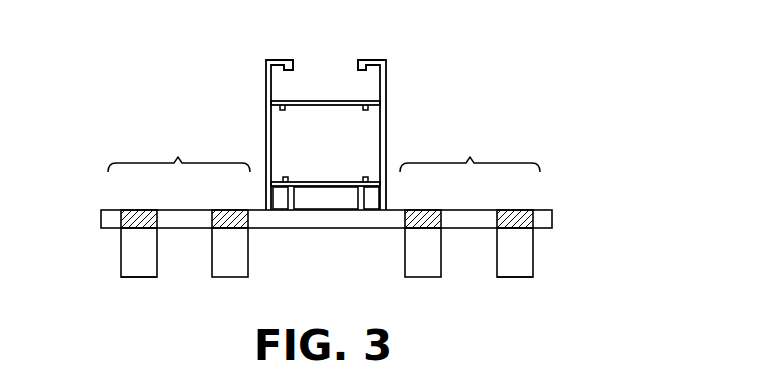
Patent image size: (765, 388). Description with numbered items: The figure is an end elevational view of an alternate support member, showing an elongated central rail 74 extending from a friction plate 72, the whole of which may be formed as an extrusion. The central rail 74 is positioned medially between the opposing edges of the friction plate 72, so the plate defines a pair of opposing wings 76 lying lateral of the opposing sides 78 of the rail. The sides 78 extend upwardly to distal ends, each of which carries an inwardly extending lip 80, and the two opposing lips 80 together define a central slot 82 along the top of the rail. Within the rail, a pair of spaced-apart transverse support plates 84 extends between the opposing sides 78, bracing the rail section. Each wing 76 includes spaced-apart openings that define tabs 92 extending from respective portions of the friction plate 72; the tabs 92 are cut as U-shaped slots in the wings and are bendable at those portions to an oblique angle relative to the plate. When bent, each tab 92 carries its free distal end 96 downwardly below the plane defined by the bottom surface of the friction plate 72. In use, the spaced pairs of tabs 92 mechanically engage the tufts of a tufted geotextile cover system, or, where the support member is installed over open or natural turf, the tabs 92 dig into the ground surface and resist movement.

The friction plate 72 is at (466, 212).
The central rail 74 is at (327, 105).
The wings 76 is at (331, 231).
The opposing sides 78 is at (266, 103).
The inwardly extending lip 80 is at (283, 60).
The central slot 82 is at (325, 80).
The transverse support plates 84 is at (400, 125).
The tabs 92 is at (133, 258).
The free distal end 96 is at (137, 278).